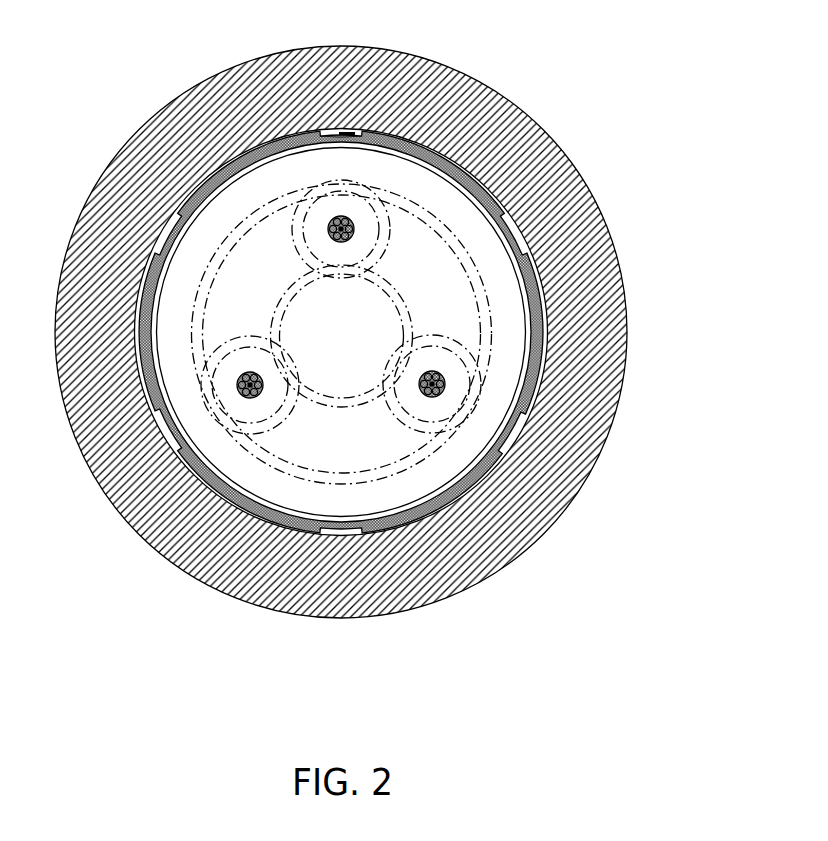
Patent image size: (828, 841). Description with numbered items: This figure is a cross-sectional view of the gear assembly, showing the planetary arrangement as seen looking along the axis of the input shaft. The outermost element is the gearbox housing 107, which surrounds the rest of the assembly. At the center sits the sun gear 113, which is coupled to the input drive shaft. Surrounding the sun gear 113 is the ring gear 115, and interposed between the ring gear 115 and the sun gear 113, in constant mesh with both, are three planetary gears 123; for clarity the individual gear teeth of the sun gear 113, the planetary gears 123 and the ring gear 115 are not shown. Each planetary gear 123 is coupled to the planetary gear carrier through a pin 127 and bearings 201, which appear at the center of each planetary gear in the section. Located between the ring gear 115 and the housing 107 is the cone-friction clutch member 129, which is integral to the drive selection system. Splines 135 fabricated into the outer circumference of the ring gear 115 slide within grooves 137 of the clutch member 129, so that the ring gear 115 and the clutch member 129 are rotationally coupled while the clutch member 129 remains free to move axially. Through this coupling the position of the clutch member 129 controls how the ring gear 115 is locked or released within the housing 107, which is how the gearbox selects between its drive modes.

The gearbox housing 107 is at (452, 105).
The sun gear 113 is at (360, 347).
The ring gear 115 is at (505, 318).
The planetary gears 123 is at (362, 238).
The pins 127 is at (250, 372).
The cone-friction clutch member 129 is at (478, 172).
The splines 135 is at (339, 139).
The grooves 137 is at (347, 131).
The bearings 201 is at (250, 399).